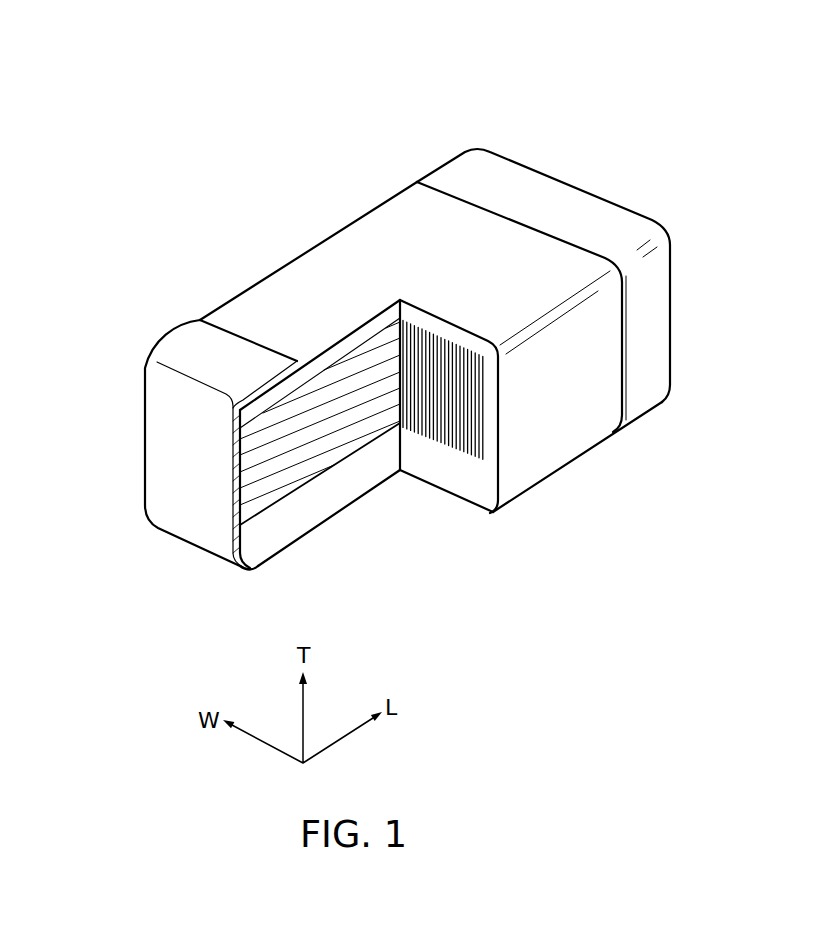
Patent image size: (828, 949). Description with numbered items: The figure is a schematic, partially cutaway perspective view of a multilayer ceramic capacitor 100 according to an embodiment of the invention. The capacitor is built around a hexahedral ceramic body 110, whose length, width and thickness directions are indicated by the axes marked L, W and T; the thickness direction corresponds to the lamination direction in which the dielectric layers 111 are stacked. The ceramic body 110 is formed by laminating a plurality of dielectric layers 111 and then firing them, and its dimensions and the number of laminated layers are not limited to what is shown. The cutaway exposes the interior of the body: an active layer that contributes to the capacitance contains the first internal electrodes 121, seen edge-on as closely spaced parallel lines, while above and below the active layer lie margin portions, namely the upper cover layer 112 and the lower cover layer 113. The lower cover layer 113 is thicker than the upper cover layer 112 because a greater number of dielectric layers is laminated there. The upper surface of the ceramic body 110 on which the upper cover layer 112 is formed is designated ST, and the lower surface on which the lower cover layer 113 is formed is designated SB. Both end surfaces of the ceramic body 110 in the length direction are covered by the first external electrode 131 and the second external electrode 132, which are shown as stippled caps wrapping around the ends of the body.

The multilayer ceramic capacitor 100 is at (332, 66).
The ceramic body 110 is at (255, 247).
The dielectric layer 111 is at (493, 407).
The upper cover layer 112 is at (343, 342).
The lower cover layer 113 is at (323, 505).
The first internal electrode 121 is at (252, 458).
The first external electrode 131 is at (178, 342).
The second external electrode 132 is at (566, 190).
The upper surface ST is at (395, 228).
The lower surface SB is at (450, 495).